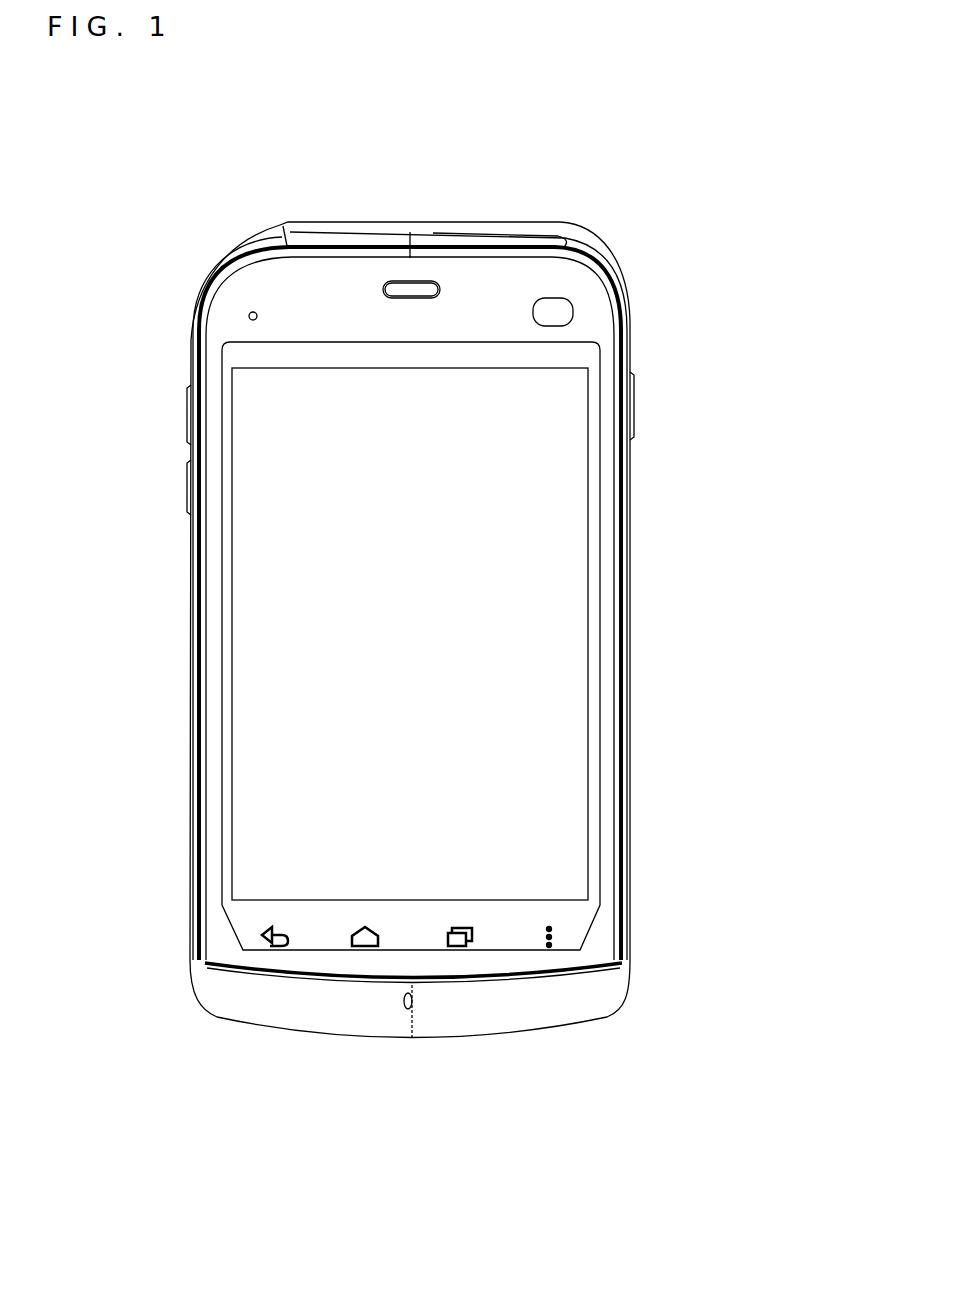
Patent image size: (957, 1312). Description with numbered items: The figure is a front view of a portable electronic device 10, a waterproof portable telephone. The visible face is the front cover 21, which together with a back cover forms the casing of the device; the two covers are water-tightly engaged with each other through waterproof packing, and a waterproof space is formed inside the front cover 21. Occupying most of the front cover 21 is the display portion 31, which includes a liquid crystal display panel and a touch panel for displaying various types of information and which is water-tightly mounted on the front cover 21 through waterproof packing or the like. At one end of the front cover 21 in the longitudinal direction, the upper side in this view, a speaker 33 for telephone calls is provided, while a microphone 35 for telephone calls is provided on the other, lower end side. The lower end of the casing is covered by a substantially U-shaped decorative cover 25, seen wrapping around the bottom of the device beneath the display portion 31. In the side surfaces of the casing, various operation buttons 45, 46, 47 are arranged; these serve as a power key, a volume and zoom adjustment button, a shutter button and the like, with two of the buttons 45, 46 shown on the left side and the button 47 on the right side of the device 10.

The electronic device 10 is at (690, 162).
The front cover 21 is at (588, 328).
The decorative cover 25 is at (222, 988).
The display portion 31 is at (541, 640).
The speaker 33 is at (413, 290).
The microphone 35 is at (407, 1006).
The operation button 45 is at (188, 405).
The operation button 46 is at (188, 487).
The operation button 47 is at (634, 400).